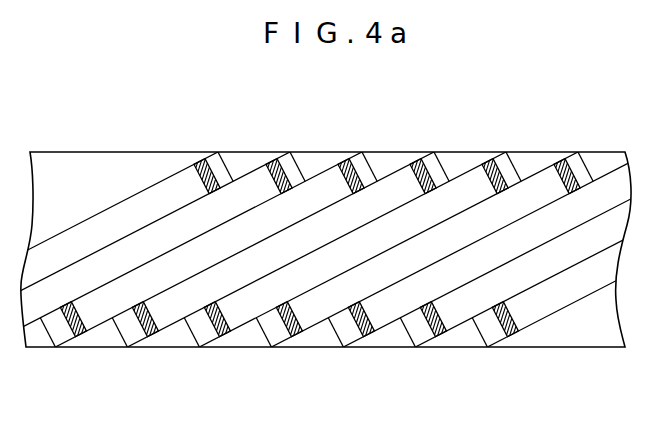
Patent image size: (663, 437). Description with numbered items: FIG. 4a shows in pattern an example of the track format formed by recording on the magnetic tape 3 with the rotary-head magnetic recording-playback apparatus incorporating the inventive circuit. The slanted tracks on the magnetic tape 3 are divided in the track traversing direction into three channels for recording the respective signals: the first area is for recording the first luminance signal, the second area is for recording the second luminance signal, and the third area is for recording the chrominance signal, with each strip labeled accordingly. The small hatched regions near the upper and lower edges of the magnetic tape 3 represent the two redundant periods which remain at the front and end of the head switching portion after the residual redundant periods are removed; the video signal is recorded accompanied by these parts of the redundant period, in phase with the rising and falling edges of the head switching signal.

The magnetic tape 3 is at (549, 347).